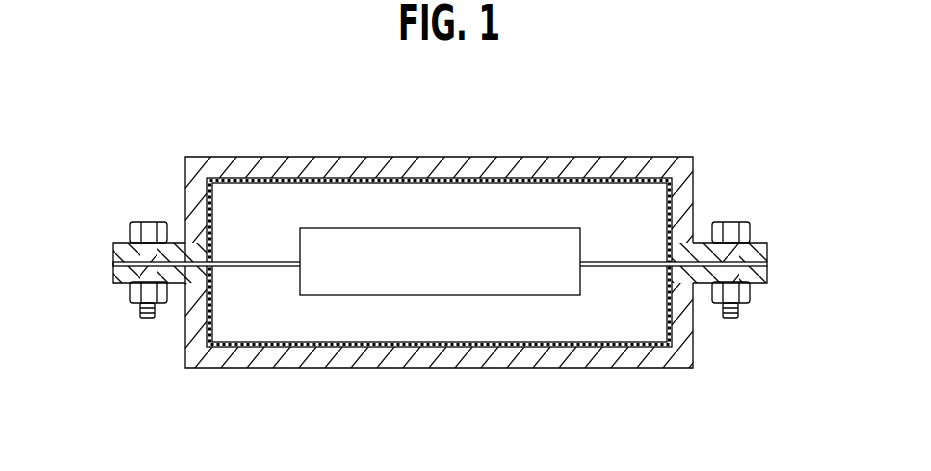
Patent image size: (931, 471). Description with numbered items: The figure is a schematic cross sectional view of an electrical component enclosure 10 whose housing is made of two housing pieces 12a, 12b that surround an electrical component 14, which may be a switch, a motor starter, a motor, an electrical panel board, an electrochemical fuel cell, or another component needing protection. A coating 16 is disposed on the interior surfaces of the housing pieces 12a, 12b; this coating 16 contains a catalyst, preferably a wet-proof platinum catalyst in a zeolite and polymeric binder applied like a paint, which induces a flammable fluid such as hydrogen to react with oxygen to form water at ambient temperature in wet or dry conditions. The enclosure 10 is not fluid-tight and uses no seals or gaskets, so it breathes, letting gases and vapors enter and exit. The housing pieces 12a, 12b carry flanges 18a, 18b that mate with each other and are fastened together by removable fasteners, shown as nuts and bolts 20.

The electrical component enclosure 10 is at (452, 261).
The housing piece 12a is at (693, 173).
The housing piece 12b is at (693, 360).
The electrical component 14 is at (512, 282).
The coating 16 is at (547, 182).
The flange 18a is at (767, 257).
The flange 18b is at (767, 275).
The nuts and bolts 20 is at (131, 235).